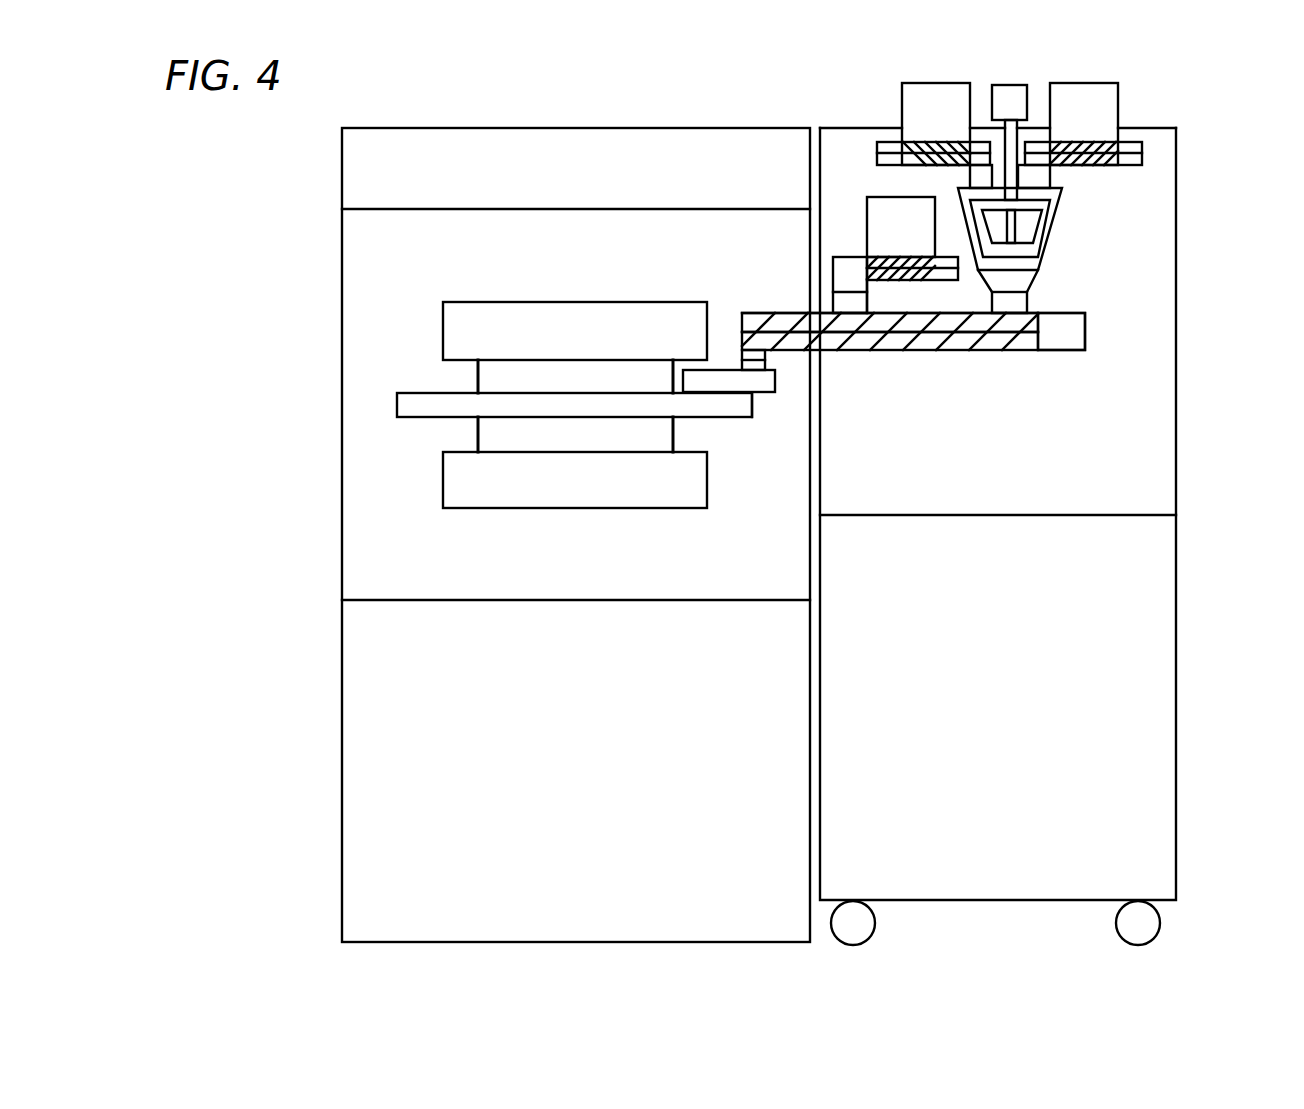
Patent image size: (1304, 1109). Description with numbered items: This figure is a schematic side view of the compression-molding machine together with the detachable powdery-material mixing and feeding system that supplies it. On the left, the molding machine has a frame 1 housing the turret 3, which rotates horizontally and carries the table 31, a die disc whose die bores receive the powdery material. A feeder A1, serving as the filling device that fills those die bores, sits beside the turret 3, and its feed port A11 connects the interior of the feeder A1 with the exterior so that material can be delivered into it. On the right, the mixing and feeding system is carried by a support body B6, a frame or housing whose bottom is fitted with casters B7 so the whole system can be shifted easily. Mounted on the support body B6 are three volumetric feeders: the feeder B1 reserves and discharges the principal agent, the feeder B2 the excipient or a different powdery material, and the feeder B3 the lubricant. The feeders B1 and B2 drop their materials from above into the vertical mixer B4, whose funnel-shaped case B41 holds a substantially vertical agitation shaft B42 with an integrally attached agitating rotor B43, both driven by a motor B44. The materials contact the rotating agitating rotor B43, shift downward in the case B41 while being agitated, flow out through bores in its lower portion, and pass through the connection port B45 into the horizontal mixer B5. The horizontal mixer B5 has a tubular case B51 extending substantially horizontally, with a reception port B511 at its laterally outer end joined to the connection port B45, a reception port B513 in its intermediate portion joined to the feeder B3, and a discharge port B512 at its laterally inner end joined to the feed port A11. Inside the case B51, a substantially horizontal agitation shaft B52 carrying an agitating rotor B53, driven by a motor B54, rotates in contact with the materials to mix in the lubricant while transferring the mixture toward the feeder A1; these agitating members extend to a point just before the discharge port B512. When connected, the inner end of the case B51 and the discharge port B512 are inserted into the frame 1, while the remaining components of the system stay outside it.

The frame 1 is at (342, 526).
The turret 3 is at (397, 404).
The table 31 is at (725, 418).
The feeder A1 is at (775, 381).
The feed port A11 is at (754, 373).
The volumetric feeder B1 is at (935, 83).
The volumetric feeder B2 is at (1097, 83).
The volumetric feeder B3 is at (867, 226).
The vertical mixer B4 is at (1044, 229).
The case B41 is at (1052, 238).
The agitation shaft B42 is at (1020, 168).
The agitating rotor B43 is at (1047, 224).
The motor B44 is at (1012, 85).
The connection port B45 is at (1033, 279).
The horizontal mixer B5 is at (961, 374).
The case B51 is at (872, 350).
The agitation shaft B52 is at (985, 350).
The agitating rotor B53 is at (930, 350).
The motor B54 is at (1060, 350).
The reception port B511 is at (1027, 304).
The discharge port B512 is at (740, 353).
The reception port B513 is at (833, 300).
The support body B6 is at (1177, 468).
The casters B7 is at (877, 923).